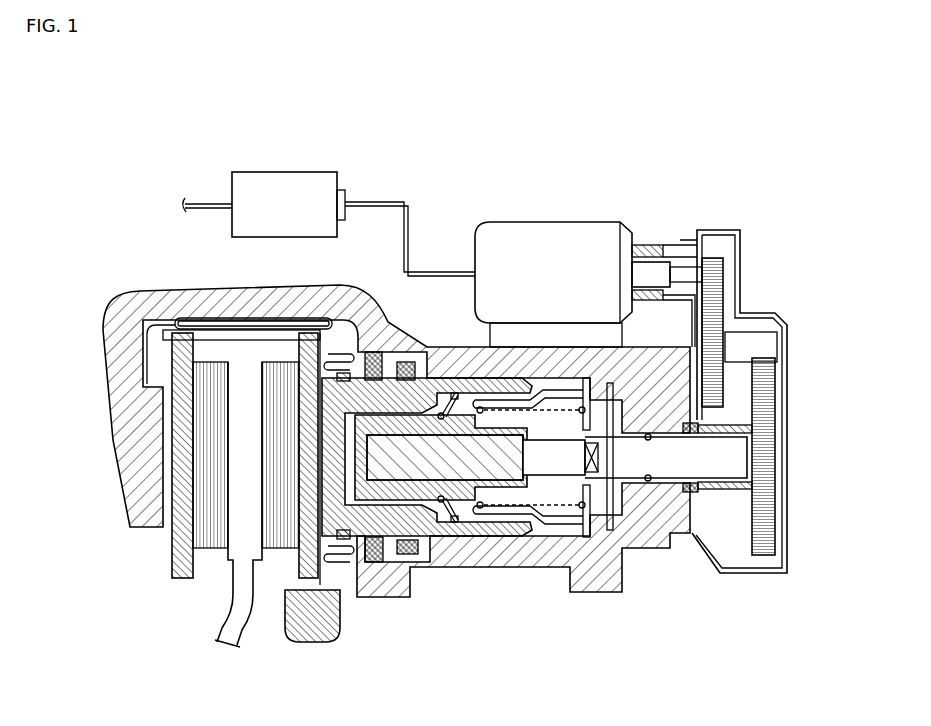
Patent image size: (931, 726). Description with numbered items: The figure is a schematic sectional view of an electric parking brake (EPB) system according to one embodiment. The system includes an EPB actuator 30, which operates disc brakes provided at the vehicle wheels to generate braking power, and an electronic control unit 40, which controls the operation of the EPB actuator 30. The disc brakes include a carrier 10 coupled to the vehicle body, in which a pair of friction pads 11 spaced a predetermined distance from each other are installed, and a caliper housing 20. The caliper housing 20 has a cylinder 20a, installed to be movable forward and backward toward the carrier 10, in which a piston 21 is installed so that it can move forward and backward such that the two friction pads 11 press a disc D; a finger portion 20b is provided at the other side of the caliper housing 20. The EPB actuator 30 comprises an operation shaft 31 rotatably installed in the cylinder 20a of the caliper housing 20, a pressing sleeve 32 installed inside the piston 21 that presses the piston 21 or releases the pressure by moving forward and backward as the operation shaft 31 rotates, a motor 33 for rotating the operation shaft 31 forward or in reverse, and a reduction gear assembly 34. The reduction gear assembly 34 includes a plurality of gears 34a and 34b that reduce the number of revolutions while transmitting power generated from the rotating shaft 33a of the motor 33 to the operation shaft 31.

The carrier 10 is at (263, 517).
The friction pads 11 is at (172, 556).
The caliper housing 20 is at (385, 431).
The cylinder 20a is at (542, 570).
The finger portion 20b is at (135, 508).
The piston 21 is at (432, 545).
The EPB actuator 30 is at (655, 359).
The operation shaft 31 is at (452, 478).
The pressing sleeve 32 is at (385, 515).
The motor 33 is at (544, 222).
The rotating shaft 33a is at (683, 272).
The reduction gear assembly 34 is at (710, 401).
The gear 34a is at (716, 306).
The gear 34b is at (767, 377).
The electronic control unit (ECU) 40 is at (258, 172).
The disc D is at (218, 617).